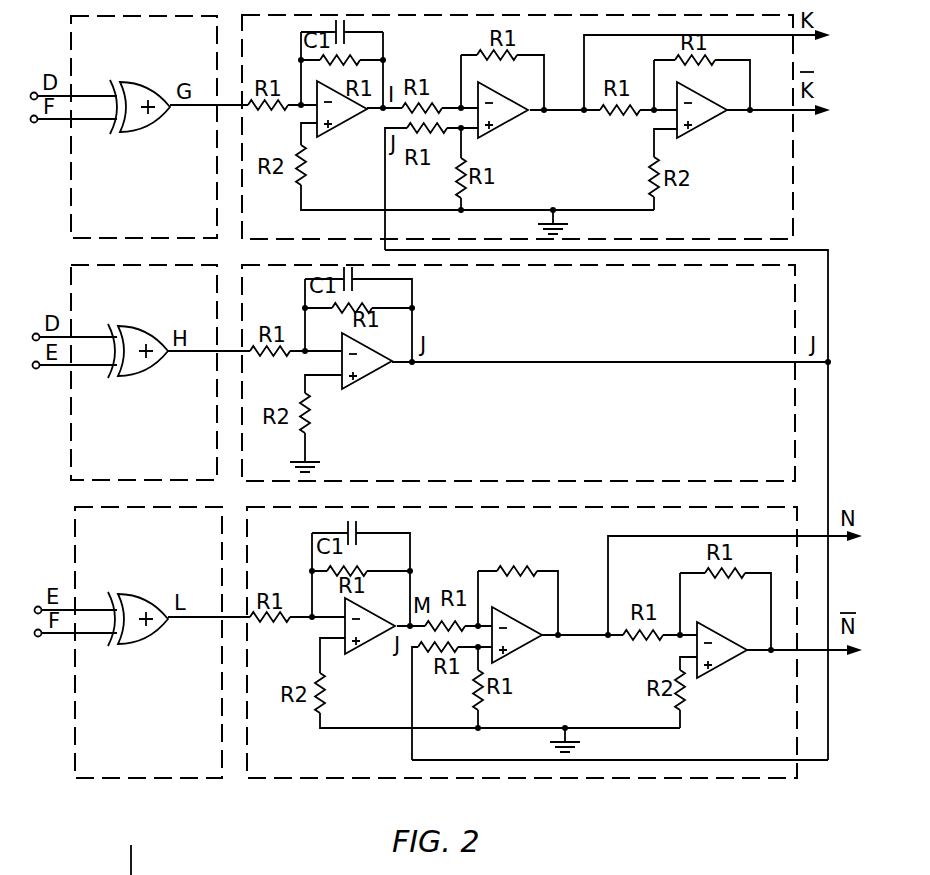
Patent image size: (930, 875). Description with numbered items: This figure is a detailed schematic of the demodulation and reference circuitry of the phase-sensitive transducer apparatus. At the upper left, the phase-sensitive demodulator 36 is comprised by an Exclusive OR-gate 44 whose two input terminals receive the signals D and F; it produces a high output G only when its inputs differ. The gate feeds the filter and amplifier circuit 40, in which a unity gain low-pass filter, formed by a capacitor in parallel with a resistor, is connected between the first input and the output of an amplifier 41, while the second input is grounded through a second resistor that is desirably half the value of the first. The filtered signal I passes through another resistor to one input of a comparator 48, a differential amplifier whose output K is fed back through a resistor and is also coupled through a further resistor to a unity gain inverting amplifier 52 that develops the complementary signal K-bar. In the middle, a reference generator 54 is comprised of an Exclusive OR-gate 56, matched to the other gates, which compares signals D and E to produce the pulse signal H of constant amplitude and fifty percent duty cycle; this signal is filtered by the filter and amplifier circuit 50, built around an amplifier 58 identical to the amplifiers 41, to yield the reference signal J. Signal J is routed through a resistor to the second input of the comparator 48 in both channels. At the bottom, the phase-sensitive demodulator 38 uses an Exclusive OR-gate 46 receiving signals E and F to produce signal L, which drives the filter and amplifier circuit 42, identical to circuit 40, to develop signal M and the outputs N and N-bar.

The phase-sensitive demodulator 36 is at (71, 163).
The Exclusive OR-gate 44 is at (162, 94).
The filter and amplifier circuit 40 is at (793, 190).
The amplifier 41 is at (352, 128).
The comparator 48 is at (512, 128).
The unity gain inverting amplifier 52 is at (708, 127).
The reference generator 54 is at (72, 420).
The Exclusive OR-gate 56 is at (152, 372).
The amplifier 58 is at (374, 366).
The filter and amplifier circuit 50 is at (795, 470).
The phase-sensitive demodulator 38 is at (75, 735).
The Exclusive OR-gate 46 is at (152, 634).
The filter and amplifier circuit 42 is at (797, 775).